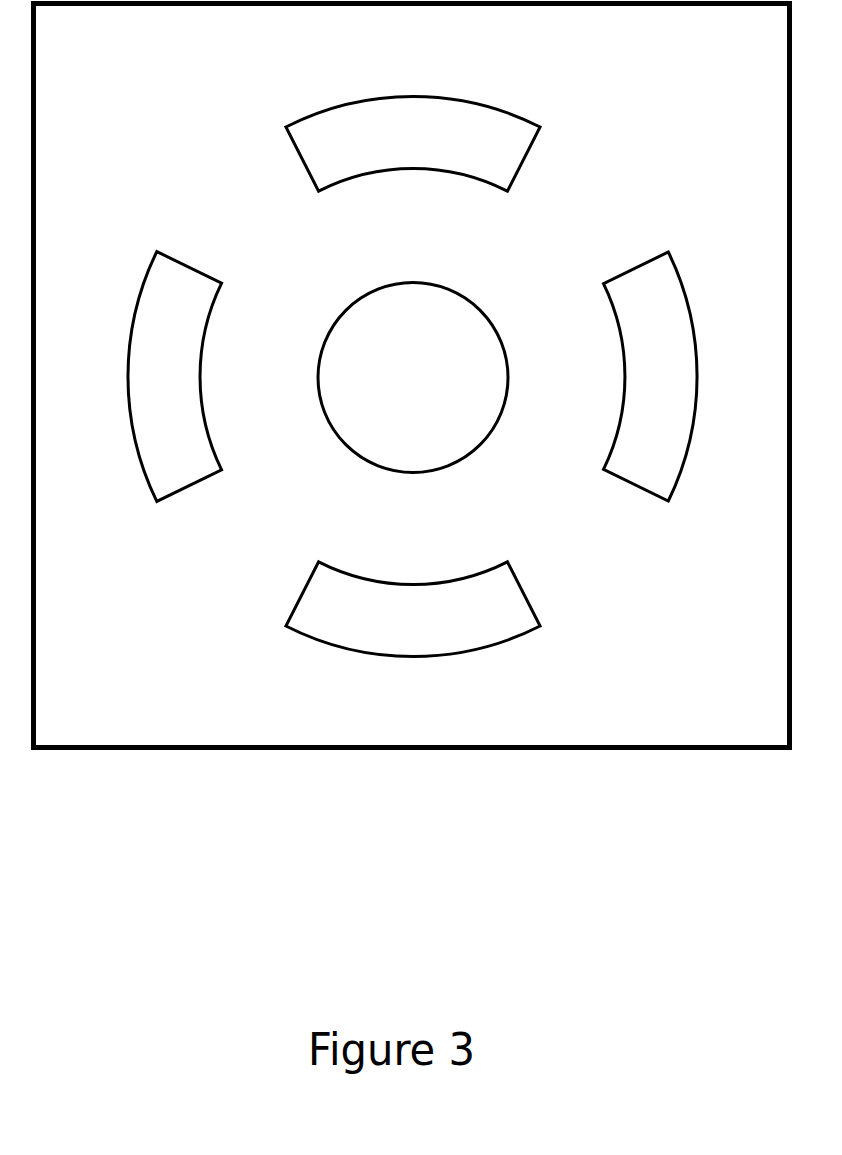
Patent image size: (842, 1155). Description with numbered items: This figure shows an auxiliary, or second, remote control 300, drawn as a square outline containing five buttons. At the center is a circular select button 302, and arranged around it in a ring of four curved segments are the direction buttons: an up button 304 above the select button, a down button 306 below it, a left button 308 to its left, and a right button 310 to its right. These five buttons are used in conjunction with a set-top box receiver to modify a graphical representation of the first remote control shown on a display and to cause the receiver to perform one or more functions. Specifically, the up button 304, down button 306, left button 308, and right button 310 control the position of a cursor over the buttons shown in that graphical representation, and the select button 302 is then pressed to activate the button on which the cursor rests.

The auxiliary remote control 300 is at (773, 734).
The select button 302 is at (440, 437).
The up button 304 is at (440, 148).
The down button 306 is at (440, 634).
The left button 308 is at (192, 390).
The right button 310 is at (689, 392).